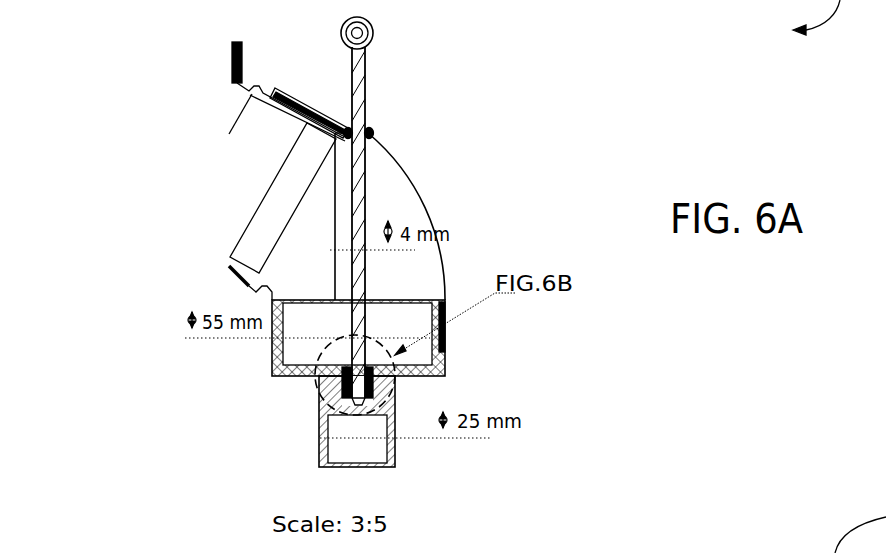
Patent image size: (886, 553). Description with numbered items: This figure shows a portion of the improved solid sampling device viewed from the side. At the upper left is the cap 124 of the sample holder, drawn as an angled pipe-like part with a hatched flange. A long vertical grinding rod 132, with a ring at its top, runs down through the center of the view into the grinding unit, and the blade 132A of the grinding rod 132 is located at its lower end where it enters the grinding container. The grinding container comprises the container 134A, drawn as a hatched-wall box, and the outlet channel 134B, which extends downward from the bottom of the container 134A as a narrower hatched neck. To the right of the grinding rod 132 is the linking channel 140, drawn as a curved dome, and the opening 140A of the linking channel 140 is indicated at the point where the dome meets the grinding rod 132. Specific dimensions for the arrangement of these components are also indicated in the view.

The cap 124 is at (252, 168).
The grinding rod 132 is at (357, 88).
The blade 132A is at (335, 392).
The container 134A is at (283, 352).
The outlet channel 134B is at (390, 410).
The linking channel 140 is at (392, 190).
The opening 140A is at (373, 131).